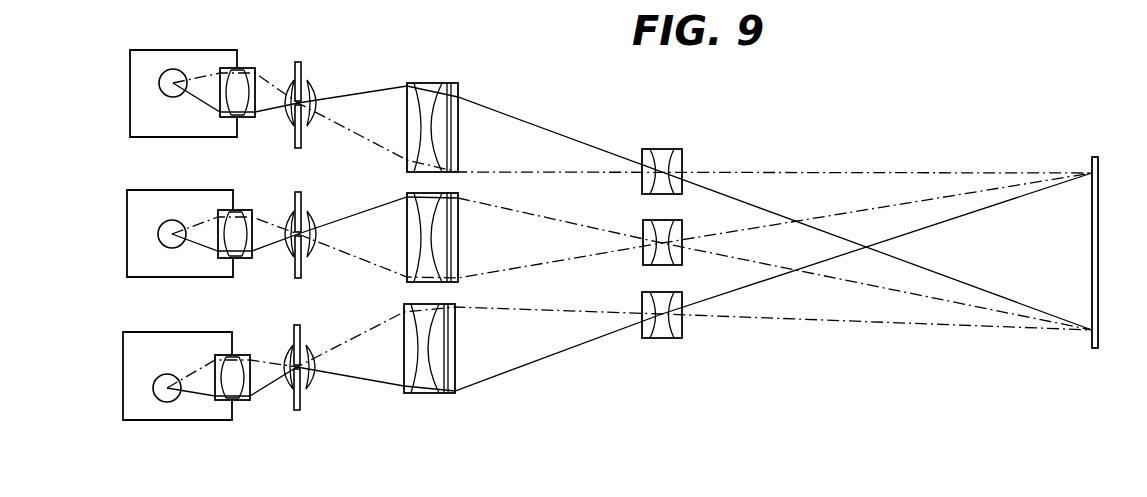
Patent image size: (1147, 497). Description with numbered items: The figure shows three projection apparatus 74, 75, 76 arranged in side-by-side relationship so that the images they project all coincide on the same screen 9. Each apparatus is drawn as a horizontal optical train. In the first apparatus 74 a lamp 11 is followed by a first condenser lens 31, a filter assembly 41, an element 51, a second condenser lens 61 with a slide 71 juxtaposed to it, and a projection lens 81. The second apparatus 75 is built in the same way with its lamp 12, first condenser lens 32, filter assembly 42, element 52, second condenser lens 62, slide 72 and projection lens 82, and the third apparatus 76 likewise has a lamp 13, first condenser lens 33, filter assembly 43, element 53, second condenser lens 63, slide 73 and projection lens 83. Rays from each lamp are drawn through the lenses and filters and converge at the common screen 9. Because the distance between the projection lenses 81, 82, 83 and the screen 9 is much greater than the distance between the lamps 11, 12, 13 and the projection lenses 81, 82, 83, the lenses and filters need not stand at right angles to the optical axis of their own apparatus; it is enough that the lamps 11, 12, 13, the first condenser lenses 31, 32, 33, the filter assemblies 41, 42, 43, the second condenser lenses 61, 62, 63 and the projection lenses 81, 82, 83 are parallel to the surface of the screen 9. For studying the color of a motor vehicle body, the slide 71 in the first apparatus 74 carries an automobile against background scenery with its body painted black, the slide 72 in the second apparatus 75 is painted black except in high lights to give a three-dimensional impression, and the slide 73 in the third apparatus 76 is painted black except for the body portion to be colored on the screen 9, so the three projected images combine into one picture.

The lamp 11 is at (172, 69).
The lamp 12 is at (172, 220).
The lamp 13 is at (167, 374).
The first condenser lens 31 is at (240, 68).
The first condenser lens 32 is at (234, 210).
The first condenser lens 33 is at (237, 355).
The filter assembly 41 is at (300, 62).
The filter assembly 42 is at (306, 186).
The filter assembly 43 is at (299, 325).
The lens pair at pinhole (first channel) 51 is at (316, 90).
The lens pair at pinhole (second channel) 52 is at (313, 222).
The lens pair at pinhole (third channel) 53 is at (311, 355).
The second condenser lens 61 is at (430, 83).
The second condenser lens 62 is at (437, 194).
The second condenser lens 63 is at (433, 304).
The slide 71 is at (460, 99).
The slide 72 is at (460, 214).
The slide 73 is at (456, 330).
The projection lens 81 is at (671, 149).
The projection lens 82 is at (666, 222).
The projection lens 83 is at (666, 338).
The first projection apparatus 74 is at (121, 90).
The second projection apparatus 75 is at (121, 224).
The third projection apparatus 76 is at (119, 365).
The screen 9 is at (1098, 229).